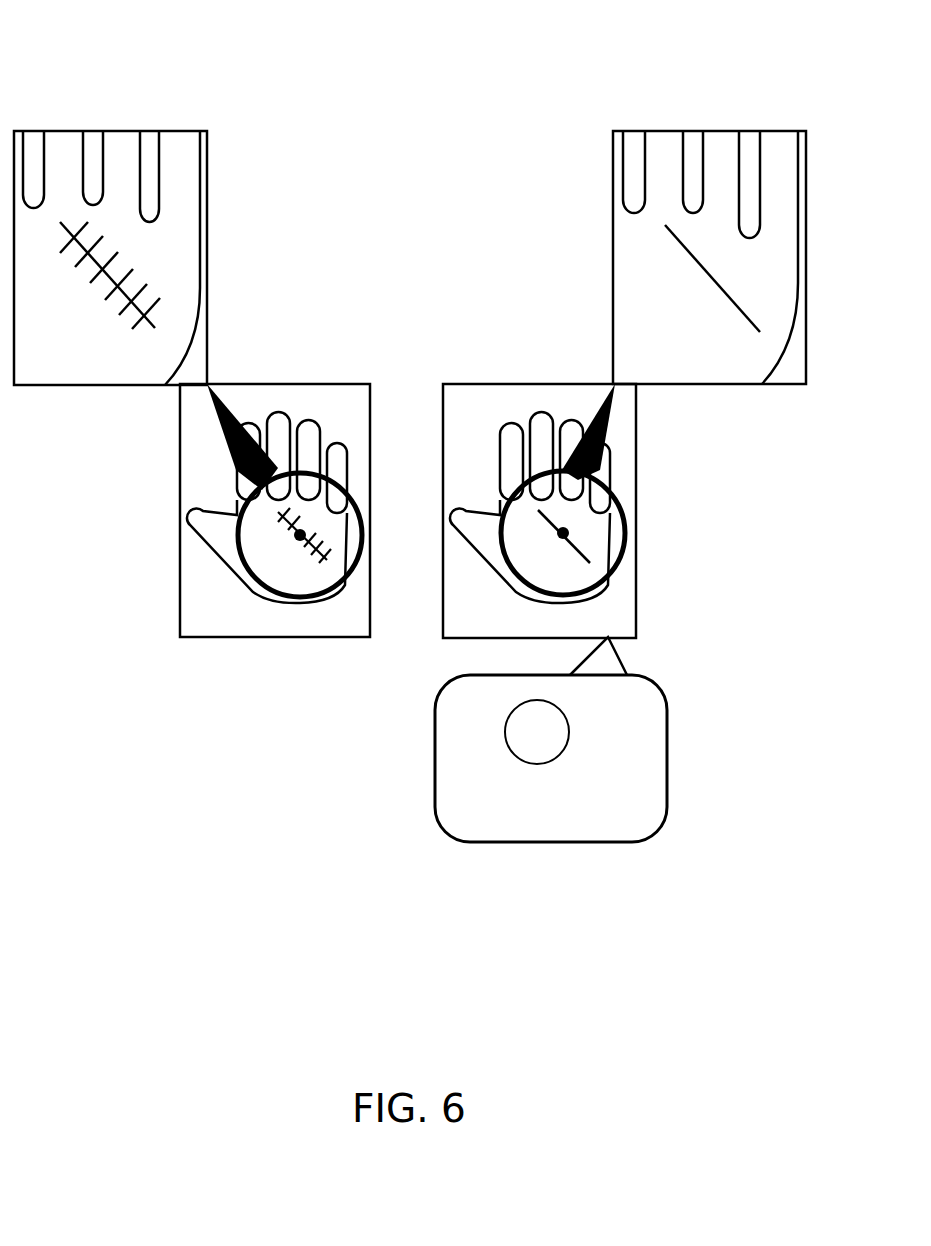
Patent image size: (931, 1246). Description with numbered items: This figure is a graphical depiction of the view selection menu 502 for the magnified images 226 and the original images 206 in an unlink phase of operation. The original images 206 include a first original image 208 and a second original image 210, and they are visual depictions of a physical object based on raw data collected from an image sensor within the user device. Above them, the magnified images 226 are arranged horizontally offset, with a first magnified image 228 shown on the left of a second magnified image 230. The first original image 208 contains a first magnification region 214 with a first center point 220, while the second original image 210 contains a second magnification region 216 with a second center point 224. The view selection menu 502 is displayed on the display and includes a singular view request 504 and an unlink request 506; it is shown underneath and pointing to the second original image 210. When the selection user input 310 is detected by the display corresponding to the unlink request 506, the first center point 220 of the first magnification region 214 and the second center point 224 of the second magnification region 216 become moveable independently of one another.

The original images 206 is at (215, 565).
The first original image 208 is at (211, 429).
The second original image 210 is at (626, 432).
The first magnification region 214 is at (300, 498).
The second magnification region 216 is at (567, 505).
The first center point 220 is at (296, 537).
The second center point 224 is at (569, 535).
The magnified images 226 is at (110, 197).
The first magnified image 228 is at (68, 182).
The second magnified image 230 is at (667, 165).
The selection user input 310 is at (533, 703).
The view selection menu 502 is at (655, 755).
The singular view request 504 is at (645, 808).
The unlink request 506 is at (572, 780).